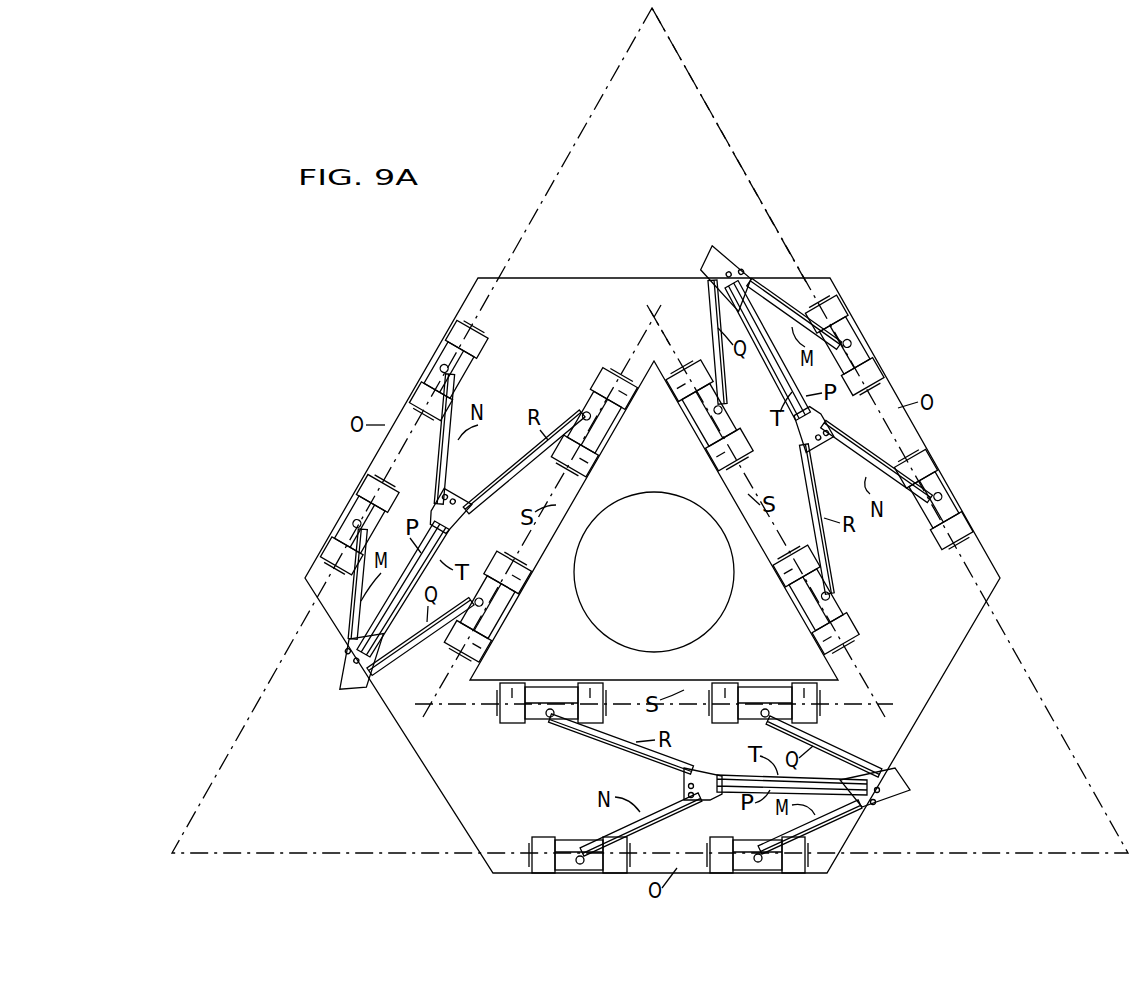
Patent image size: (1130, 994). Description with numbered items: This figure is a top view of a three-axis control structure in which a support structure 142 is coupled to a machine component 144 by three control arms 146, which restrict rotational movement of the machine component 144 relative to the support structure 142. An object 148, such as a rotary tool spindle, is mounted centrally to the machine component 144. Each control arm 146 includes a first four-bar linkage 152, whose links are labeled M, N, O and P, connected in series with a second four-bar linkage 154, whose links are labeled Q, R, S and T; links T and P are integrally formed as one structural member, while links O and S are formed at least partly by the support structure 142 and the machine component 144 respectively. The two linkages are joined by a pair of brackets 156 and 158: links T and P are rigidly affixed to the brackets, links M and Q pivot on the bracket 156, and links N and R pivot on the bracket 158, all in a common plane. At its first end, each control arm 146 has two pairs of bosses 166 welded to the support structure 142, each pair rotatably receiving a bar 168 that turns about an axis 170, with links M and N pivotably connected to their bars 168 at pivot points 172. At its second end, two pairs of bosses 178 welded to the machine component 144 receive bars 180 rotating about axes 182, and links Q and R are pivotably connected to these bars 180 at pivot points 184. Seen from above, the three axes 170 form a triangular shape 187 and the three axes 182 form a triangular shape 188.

The support structure 142 is at (560, 278).
The machine component 144 is at (720, 472).
The control arm 146 is at (750, 240).
The object 148 is at (670, 584).
The first four-bar linkage 152 is at (782, 290).
The second four-bar linkage 154 is at (700, 313).
The bracket 156 is at (728, 266).
The bracket 158 is at (822, 432).
The bosses 166 is at (447, 328).
The bar 168 is at (435, 345).
The axis 170 is at (791, 247).
The pivot point 172 is at (438, 355).
The bosses 178 is at (620, 402).
The bar 180 is at (606, 432).
The axis 182 is at (642, 335).
The pivot point 184 is at (586, 412).
The triangular shape 187 is at (717, 104).
The triangular shape 188 is at (660, 325).